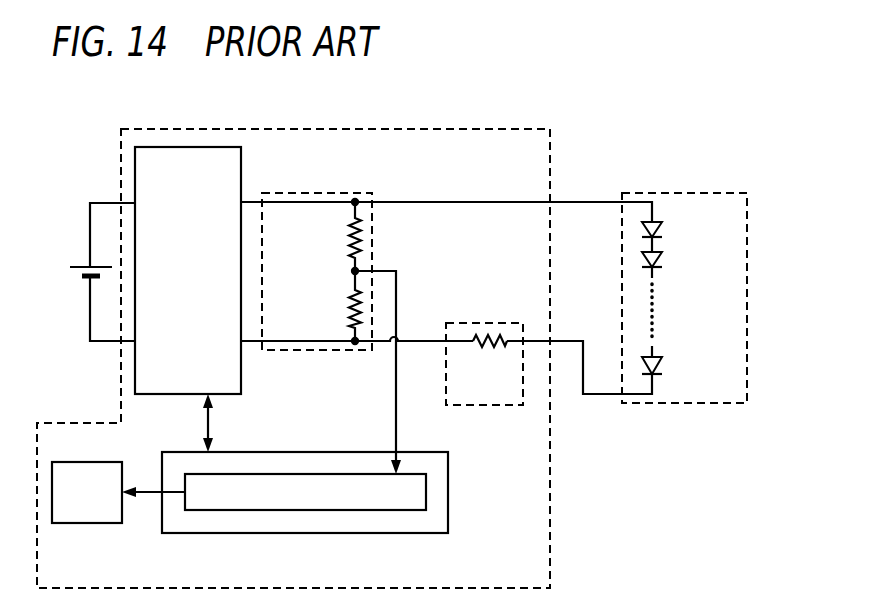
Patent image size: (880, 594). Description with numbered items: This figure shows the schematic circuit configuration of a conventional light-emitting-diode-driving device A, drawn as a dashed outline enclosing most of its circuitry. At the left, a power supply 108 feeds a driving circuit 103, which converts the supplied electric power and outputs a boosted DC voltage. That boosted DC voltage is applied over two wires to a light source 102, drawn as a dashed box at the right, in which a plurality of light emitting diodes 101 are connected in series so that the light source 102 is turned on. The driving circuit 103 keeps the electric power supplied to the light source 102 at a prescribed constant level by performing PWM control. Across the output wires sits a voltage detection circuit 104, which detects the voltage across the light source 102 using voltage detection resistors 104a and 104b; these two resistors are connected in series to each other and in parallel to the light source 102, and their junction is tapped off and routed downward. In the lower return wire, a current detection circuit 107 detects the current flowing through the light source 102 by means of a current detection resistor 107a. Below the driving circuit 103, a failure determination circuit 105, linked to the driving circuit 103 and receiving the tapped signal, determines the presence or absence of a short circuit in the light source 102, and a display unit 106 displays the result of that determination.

The light-emitting-diode-driving device A is at (519, 127).
The light emitting diode 101 is at (658, 352).
The light source 102 is at (684, 268).
The driving circuit 103 is at (228, 172).
The voltage detection circuit 104 is at (351, 271).
The voltage detection resistor 104a is at (347, 233).
The voltage detection resistor 104b is at (347, 299).
The failure determination circuit 105 is at (313, 485).
The display unit 106 is at (85, 510).
The current detection circuit 107 is at (484, 339).
The current detection resistor 107a is at (487, 353).
The power supply 108 is at (77, 283).